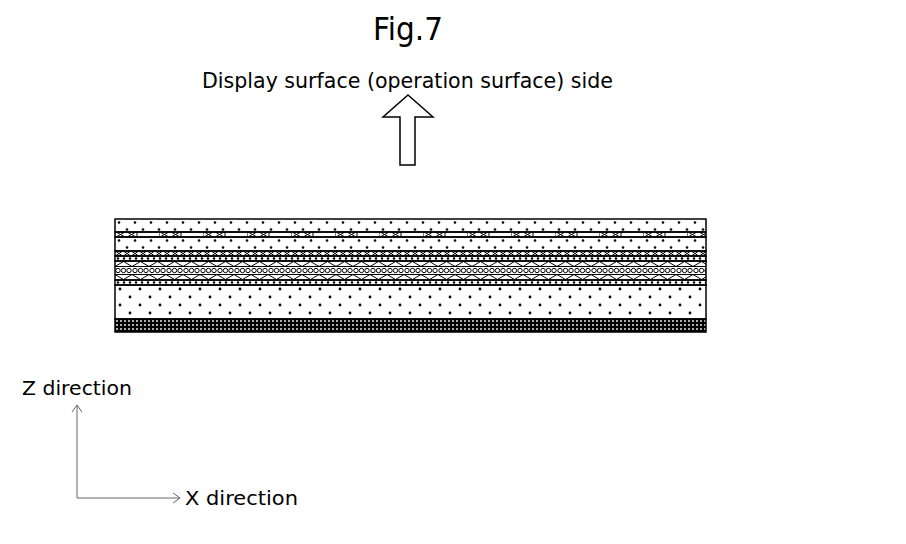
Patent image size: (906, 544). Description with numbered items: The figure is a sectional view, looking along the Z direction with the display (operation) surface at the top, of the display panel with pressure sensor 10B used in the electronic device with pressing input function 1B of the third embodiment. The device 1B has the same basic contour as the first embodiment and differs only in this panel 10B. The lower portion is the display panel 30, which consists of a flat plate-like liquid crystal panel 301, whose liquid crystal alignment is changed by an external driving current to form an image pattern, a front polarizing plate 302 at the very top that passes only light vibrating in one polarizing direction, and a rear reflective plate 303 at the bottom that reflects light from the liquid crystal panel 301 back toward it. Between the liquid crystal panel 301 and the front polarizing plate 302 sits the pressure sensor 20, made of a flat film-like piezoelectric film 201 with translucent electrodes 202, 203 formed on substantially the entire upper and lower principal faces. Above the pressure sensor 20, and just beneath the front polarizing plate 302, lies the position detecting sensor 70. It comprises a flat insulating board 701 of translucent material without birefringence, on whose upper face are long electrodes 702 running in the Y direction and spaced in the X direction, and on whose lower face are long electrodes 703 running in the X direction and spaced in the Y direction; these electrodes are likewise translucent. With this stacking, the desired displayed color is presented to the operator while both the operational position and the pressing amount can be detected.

The electronic device with pressing input function 1B is at (180, 178).
The display panel with pressure sensor 10B is at (628, 213).
The pressure sensor 20 is at (767, 233).
The piezoelectric film 201 is at (706, 271).
The electrode 202 is at (706, 259).
The electrode 203 is at (706, 280).
The display panel 30 is at (776, 354).
The liquid crystal panel 301 is at (698, 302).
The front polarizing plate 302 is at (703, 225).
The rear reflective plate 303 is at (706, 327).
The position detecting sensor 70 is at (60, 215).
The insulating board 701 is at (116, 248).
The electrodes 702 is at (127, 234).
The electrodes 703 is at (116, 252).